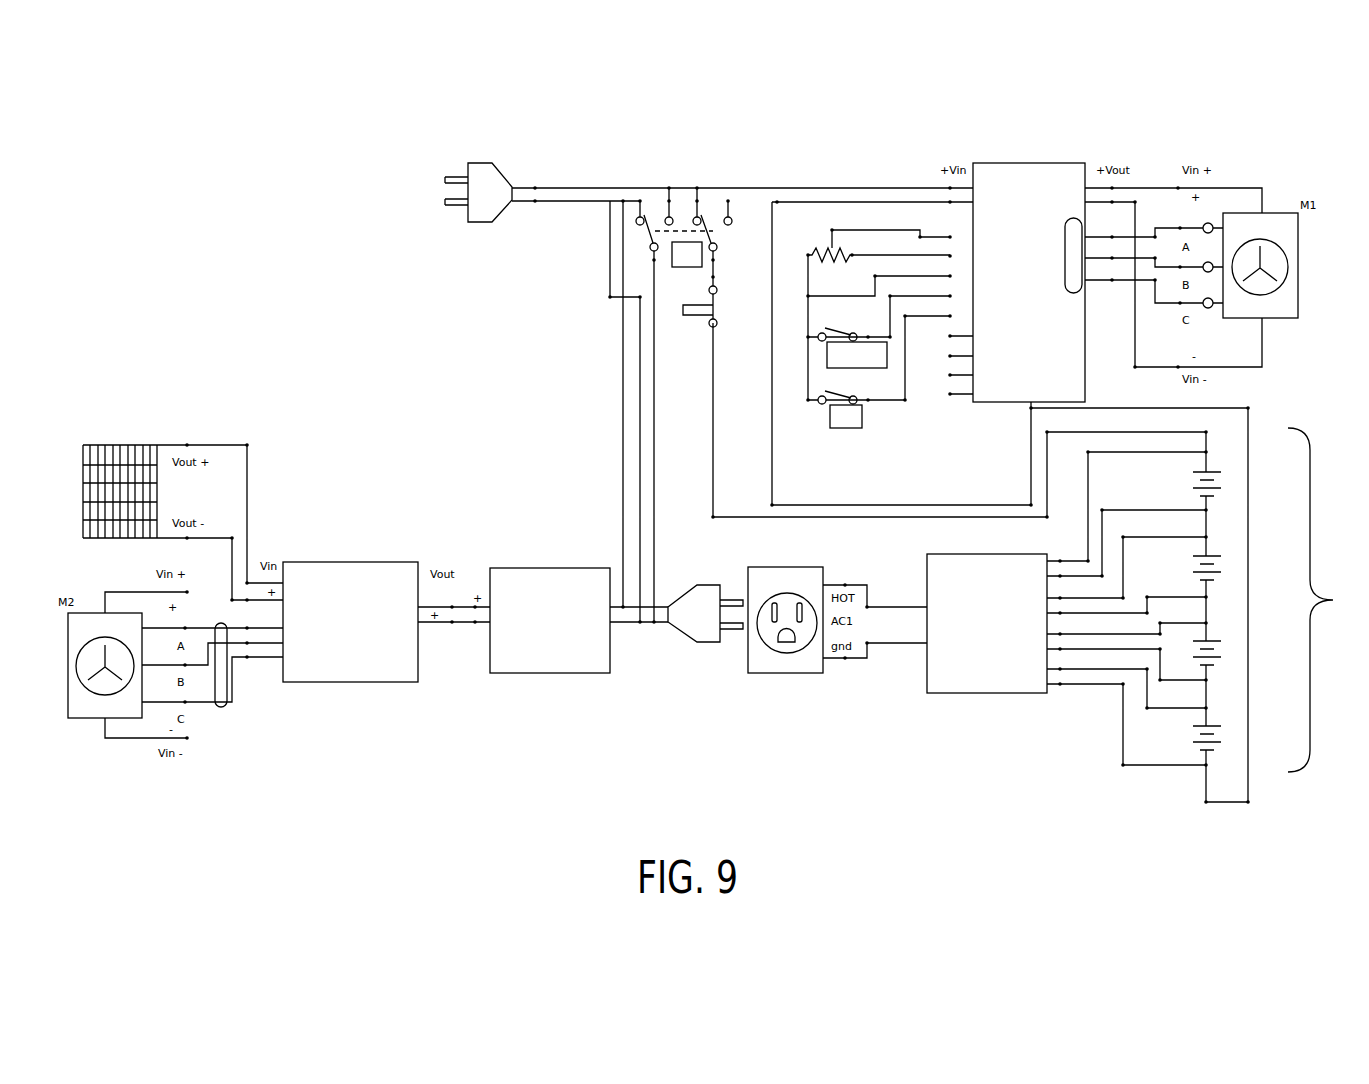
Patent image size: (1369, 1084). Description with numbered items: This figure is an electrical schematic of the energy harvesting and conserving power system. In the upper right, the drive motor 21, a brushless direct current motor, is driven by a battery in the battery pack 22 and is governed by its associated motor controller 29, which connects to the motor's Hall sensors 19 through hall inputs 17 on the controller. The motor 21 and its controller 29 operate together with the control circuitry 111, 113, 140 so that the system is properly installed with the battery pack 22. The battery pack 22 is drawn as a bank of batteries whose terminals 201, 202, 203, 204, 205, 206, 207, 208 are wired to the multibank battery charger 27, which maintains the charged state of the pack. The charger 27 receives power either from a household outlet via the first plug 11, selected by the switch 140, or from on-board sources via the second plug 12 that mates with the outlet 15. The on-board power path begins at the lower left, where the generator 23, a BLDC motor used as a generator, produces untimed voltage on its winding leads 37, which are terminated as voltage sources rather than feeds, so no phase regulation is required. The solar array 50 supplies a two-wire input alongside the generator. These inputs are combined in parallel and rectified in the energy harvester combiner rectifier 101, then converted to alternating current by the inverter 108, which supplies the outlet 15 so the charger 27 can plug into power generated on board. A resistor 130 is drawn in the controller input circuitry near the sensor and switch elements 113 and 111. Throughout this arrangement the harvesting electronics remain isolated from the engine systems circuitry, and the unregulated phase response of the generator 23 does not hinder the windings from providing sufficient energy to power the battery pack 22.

The first plug 11 is at (489, 181).
The second plug 12 is at (697, 626).
The 120VAC outlet 15 is at (785, 673).
The hall sensor inputs 17 is at (1073, 293).
The Hall sensors 19 is at (1212, 299).
The drive motor 21 is at (1289, 261).
The battery pack 22 is at (1276, 615).
The generator 23 is at (76, 672).
The battery charger 27 is at (985, 693).
The motor controller 29 is at (1029, 255).
The winding leads 37 is at (228, 695).
The solar array 50 is at (130, 460).
The energy harvester voltage combiner rectifier 101 is at (355, 562).
The inverter 108 is at (548, 568).
The control circuitry 111 is at (862, 418).
The control circuitry 113 is at (888, 360).
The resistor R 130 is at (820, 250).
The switch 140 is at (688, 240).
The battery B1 positive terminal 201 is at (1222, 462).
The battery B1 negative terminal 202 is at (1224, 508).
The battery B2 positive terminal 203 is at (1222, 546).
The battery B2 negative terminal 204 is at (1224, 592).
The battery B3 positive terminal 205 is at (1222, 632).
The battery B3 negative terminal 206 is at (1224, 677).
The battery B4 positive terminal 207 is at (1222, 718).
The battery B4 negative terminal 208 is at (1224, 763).